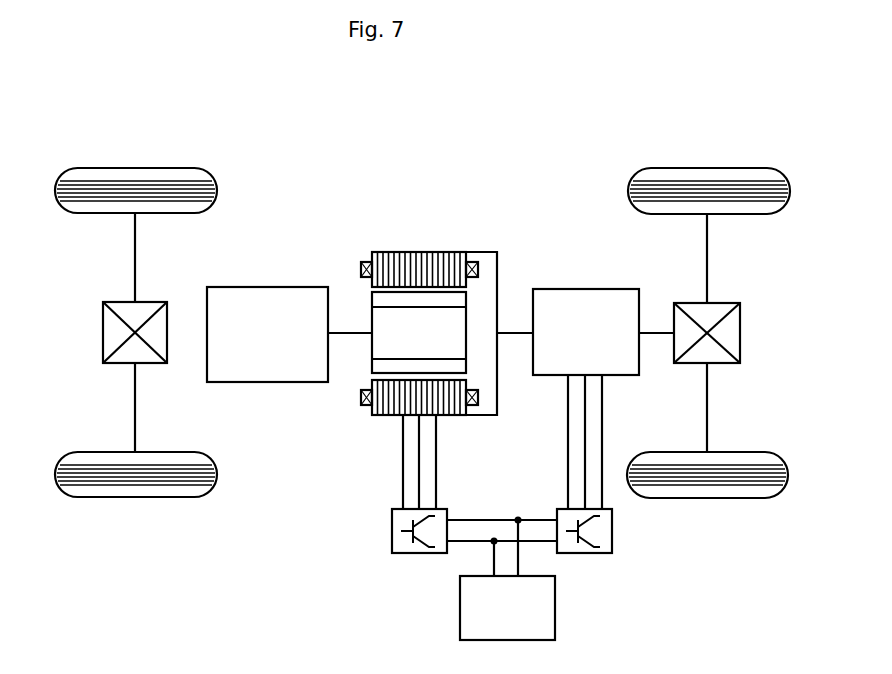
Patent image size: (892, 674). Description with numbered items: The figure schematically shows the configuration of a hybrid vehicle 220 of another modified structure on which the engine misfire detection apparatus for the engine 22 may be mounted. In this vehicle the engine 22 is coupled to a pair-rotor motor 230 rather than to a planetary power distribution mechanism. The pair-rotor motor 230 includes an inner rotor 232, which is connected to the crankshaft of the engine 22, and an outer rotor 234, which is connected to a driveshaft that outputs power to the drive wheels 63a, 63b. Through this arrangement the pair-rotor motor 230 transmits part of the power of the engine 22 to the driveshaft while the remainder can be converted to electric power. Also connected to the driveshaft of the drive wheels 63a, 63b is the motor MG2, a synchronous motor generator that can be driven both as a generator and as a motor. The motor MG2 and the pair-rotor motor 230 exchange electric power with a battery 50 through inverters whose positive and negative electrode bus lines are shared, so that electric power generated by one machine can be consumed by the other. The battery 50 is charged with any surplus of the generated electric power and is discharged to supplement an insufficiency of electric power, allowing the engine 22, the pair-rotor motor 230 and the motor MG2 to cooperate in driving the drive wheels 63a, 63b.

The engine 22 is at (267, 382).
The hybrid vehicle 220 is at (523, 177).
The pair-rotor motor 230 is at (423, 182).
The inner rotor 232 is at (372, 315).
The outer rotor 234 is at (420, 253).
The motor MG2 is at (586, 289).
The drive wheel 63a is at (708, 168).
The drive wheel 63b is at (705, 498).
The battery 50 is at (555, 603).